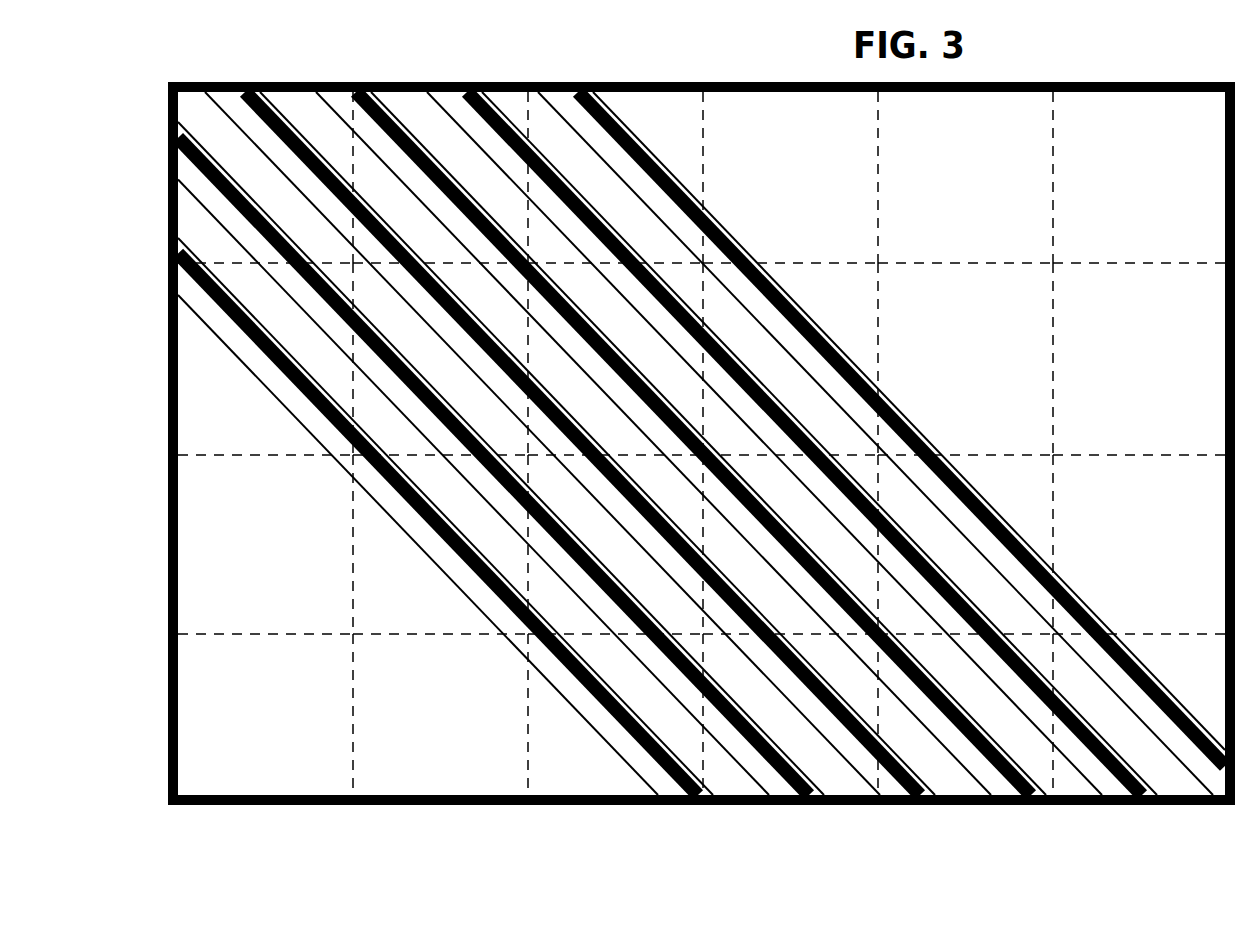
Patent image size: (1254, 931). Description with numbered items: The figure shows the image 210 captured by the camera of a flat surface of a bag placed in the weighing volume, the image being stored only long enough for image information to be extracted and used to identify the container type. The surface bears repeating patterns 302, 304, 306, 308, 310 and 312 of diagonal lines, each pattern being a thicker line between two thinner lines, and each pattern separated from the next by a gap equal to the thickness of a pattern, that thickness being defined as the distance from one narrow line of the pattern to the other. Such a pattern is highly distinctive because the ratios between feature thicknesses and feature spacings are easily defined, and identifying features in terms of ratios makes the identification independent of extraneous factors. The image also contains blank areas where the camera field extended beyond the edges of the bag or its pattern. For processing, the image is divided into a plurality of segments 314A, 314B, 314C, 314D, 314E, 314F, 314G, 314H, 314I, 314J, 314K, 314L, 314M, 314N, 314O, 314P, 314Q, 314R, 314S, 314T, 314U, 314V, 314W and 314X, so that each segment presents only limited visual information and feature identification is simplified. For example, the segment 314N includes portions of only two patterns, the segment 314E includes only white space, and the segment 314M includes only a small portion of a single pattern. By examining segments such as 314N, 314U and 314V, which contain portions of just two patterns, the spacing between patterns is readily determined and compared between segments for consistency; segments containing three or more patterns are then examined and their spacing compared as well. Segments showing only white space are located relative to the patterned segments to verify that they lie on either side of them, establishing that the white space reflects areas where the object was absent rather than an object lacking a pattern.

The image 210 is at (667, 84).
The repeating pattern 302 is at (181, 258).
The repeating pattern 304 is at (181, 141).
The repeating pattern 306 is at (288, 117).
The repeating pattern 308 is at (398, 117).
The repeating pattern 310 is at (508, 112).
The repeating pattern 312 is at (745, 243).
The segment 314A is at (281, 190).
The segment 314B is at (504, 190).
The segment 314C is at (617, 188).
The segment 314D is at (811, 188).
The segment 314E is at (989, 188).
The segment 314F is at (1159, 188).
The segment 314G is at (246, 430).
The segment 314H is at (457, 368).
The segment 314I is at (673, 367).
The segment 314J is at (788, 367).
The segment 314K is at (989, 367).
The segment 314L is at (1159, 369).
The segment 314M is at (277, 548).
The segment 314N is at (421, 610).
The segment 314O is at (634, 550).
The segment 314P is at (856, 550).
The segment 314Q is at (1039, 490).
The segment 314R is at (1159, 552).
The segment 314S is at (277, 723).
The segment 314T is at (456, 723).
The segment 314U is at (589, 773).
The segment 314V is at (802, 723).
The segment 314W is at (1024, 723).
The segment 314X is at (1214, 668).